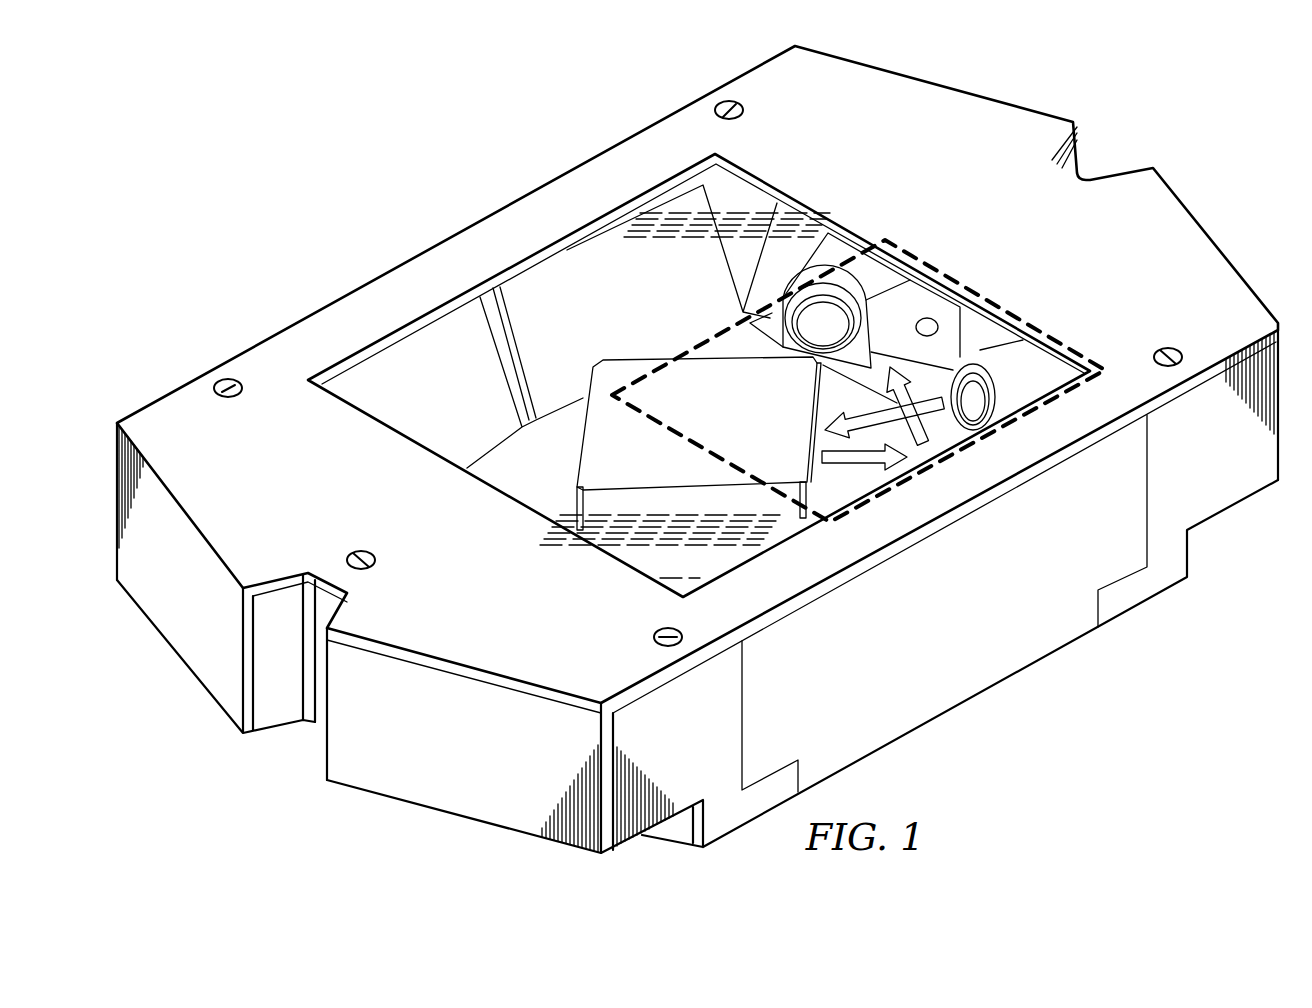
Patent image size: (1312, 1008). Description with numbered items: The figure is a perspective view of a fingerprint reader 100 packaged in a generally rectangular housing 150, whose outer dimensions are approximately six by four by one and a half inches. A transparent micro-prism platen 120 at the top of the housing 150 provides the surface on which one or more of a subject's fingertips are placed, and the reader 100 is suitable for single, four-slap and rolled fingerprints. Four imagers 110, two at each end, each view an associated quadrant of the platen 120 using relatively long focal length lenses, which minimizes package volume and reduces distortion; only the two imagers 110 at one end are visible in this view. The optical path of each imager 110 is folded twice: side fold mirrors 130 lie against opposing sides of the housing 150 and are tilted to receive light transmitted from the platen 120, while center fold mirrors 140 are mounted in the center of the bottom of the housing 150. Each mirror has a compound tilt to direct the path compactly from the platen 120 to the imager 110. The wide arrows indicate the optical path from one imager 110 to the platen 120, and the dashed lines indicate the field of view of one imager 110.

The fingerprint reader 100 is at (1240, 157).
The imager 110 is at (1043, 360).
The transparent micro-prism platen 120 is at (748, 202).
The side fold mirror 130 is at (523, 300).
The center fold mirror 140 is at (577, 457).
The housing 150 is at (343, 318).